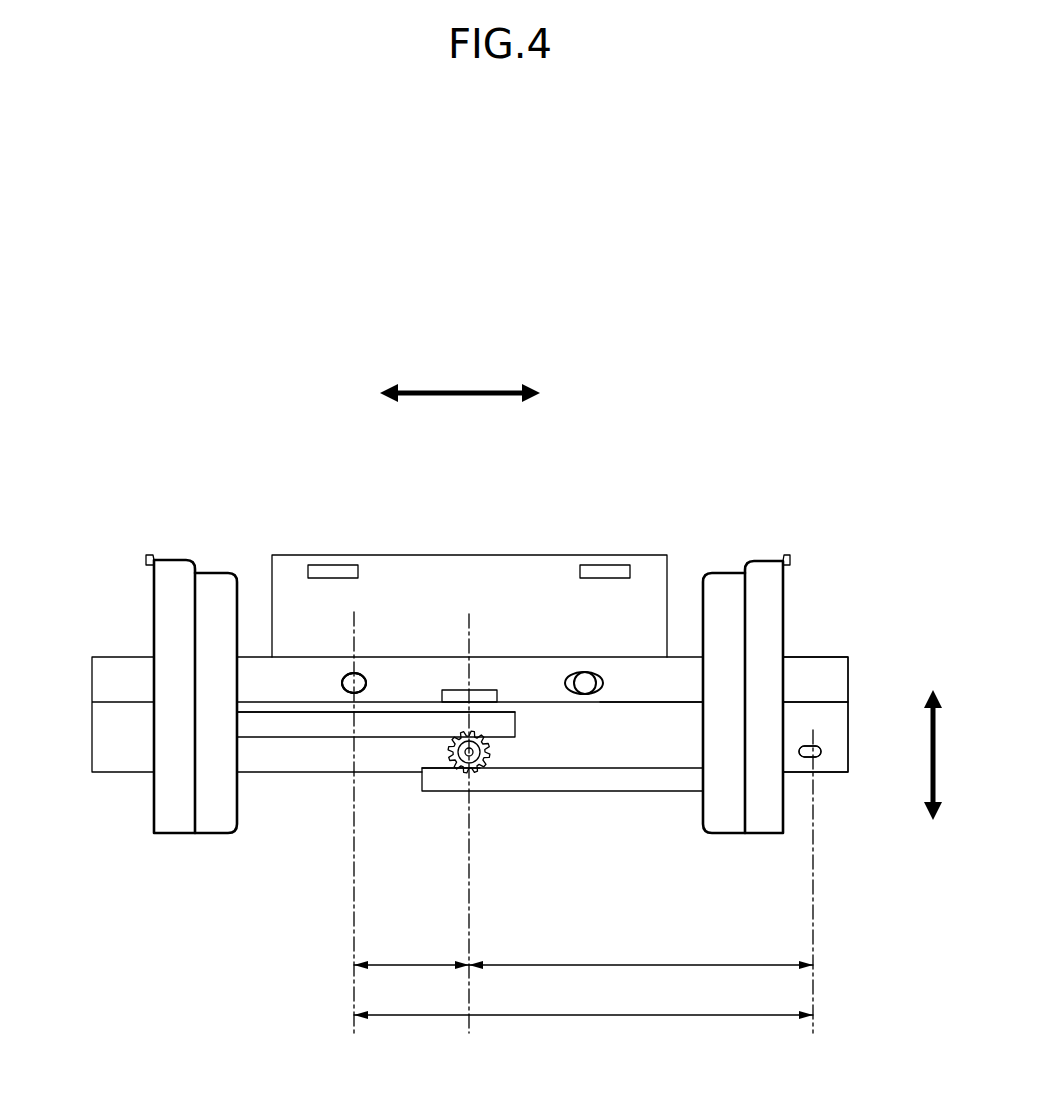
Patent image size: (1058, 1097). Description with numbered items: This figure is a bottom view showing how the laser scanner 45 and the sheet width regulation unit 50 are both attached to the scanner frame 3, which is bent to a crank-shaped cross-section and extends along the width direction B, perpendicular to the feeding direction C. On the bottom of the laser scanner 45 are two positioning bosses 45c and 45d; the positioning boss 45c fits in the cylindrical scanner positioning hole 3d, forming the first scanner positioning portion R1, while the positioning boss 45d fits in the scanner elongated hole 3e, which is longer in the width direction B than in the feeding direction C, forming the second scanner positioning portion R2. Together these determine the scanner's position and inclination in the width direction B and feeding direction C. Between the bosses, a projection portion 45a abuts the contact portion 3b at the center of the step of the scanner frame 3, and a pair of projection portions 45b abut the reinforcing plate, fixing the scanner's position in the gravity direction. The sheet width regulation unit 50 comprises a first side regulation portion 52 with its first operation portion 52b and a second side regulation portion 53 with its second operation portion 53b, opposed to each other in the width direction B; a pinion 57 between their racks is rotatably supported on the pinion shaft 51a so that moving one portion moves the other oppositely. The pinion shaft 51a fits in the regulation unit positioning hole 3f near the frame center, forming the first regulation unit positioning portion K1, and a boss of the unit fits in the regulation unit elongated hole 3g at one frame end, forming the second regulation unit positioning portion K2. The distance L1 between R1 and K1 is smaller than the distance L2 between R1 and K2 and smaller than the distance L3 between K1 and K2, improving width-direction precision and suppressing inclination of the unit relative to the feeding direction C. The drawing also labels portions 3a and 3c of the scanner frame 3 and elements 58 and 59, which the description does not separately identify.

The sheet width regulation unit 50 is at (178, 532).
The scanner frame 3 is at (110, 740).
The shaft end portion 3a is at (803, 720).
The contact portion 3b is at (443, 707).
The shaft upper portion 3c is at (803, 667).
The scanner positioning hole 3d is at (350, 694).
The scanner elongated hole 3e is at (590, 697).
The regulation unit positioning hole 3f is at (476, 766).
The regulation unit elongated hole 3g is at (815, 758).
The second side regulation portion 53 is at (177, 790).
The second operation portion 53b is at (145, 563).
The first side regulation portion 52 is at (765, 828).
The first operation portion 52b is at (789, 560).
The laser scanner 45 is at (472, 567).
The projection portion 45a is at (489, 690).
The projection portions 45b is at (330, 568).
The positioning boss 45c is at (358, 673).
The positioning boss 45d is at (585, 680).
The first scanner positioning portion R1 is at (368, 658).
The second scanner positioning portion R2 is at (578, 655).
The slide member 59 is at (298, 722).
The pinion shaft 51a is at (468, 742).
The pinion 57 is at (458, 772).
The rack member 58 is at (576, 783).
The first regulation unit positioning portion K1 is at (501, 772).
The second regulation unit positioning portion K2 is at (822, 736).
The width direction B is at (460, 377).
The feeding direction C is at (943, 755).
The distance L1 is at (411, 952).
The distance L2 is at (583, 1002).
The distance L3 is at (641, 952).